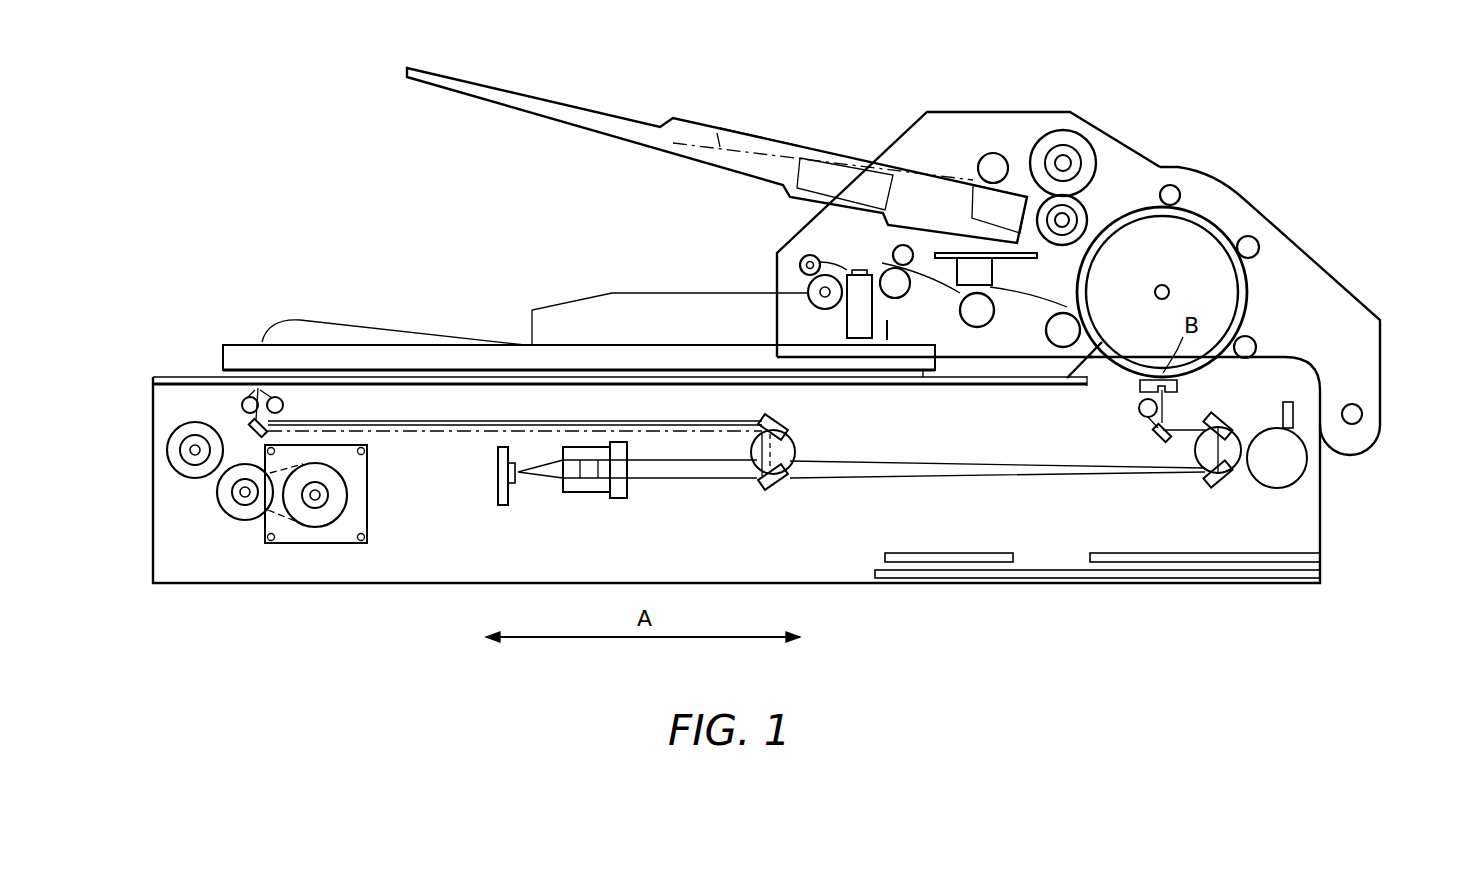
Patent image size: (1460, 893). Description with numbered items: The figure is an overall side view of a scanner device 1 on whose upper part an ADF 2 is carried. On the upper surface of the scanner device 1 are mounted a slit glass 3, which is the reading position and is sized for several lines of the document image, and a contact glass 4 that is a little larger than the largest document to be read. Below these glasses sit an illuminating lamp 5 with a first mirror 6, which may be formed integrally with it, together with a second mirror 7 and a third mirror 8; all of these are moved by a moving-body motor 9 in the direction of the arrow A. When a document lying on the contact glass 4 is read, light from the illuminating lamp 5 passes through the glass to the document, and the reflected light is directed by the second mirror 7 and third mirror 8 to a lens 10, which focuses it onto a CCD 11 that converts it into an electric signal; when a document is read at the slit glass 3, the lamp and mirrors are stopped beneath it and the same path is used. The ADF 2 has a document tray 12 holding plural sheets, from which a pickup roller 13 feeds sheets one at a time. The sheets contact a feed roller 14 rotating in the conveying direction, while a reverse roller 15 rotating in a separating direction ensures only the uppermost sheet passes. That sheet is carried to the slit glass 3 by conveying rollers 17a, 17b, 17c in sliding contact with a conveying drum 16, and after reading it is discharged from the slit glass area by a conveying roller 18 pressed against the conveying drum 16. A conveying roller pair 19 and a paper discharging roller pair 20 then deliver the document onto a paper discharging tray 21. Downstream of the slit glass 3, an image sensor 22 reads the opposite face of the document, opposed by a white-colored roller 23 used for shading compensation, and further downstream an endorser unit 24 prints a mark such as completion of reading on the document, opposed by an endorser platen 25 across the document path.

The scanner device 1 is at (1402, 352).
The ADF 2 is at (1163, 88).
The slit glass 3 is at (1140, 390).
The contact glass 4 is at (980, 388).
The illuminating lamp 5 is at (250, 398).
The first mirror 6 is at (250, 428).
The second mirror 7 is at (790, 428).
The third mirror 8 is at (777, 488).
The moving-body motor 9 is at (367, 490).
The lens 10 is at (596, 492).
The CCD 11 is at (498, 478).
The document tray 12 is at (675, 118).
The pickup roller 13 is at (993, 153).
The feed roller 14 is at (1063, 130).
The reverse roller 15 is at (1112, 240).
The conveying drum 16 is at (1110, 218).
The conveying roller 17a is at (1180, 190).
The conveying roller 17b is at (1262, 245).
The conveying roller 17c is at (1258, 342).
The conveying roller 18 is at (1046, 335).
The conveying roller pair 19 is at (912, 244).
The paper discharging roller pair 20 is at (792, 255).
The paper discharging tray 21 is at (650, 343).
The image sensor 22 is at (995, 273).
The white-colored roller 23 is at (960, 312).
The endorser unit 24 is at (847, 325).
The endorser platen 25 is at (866, 258).